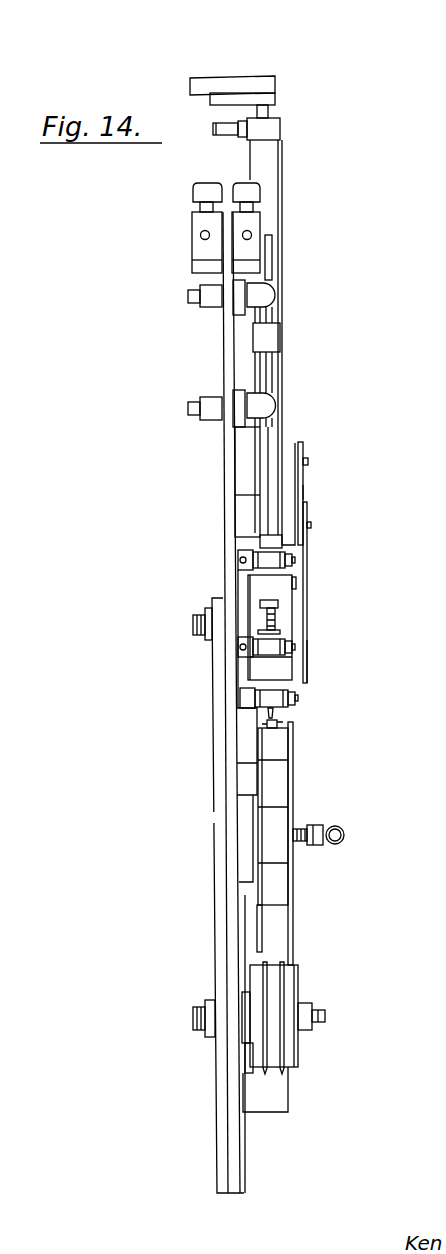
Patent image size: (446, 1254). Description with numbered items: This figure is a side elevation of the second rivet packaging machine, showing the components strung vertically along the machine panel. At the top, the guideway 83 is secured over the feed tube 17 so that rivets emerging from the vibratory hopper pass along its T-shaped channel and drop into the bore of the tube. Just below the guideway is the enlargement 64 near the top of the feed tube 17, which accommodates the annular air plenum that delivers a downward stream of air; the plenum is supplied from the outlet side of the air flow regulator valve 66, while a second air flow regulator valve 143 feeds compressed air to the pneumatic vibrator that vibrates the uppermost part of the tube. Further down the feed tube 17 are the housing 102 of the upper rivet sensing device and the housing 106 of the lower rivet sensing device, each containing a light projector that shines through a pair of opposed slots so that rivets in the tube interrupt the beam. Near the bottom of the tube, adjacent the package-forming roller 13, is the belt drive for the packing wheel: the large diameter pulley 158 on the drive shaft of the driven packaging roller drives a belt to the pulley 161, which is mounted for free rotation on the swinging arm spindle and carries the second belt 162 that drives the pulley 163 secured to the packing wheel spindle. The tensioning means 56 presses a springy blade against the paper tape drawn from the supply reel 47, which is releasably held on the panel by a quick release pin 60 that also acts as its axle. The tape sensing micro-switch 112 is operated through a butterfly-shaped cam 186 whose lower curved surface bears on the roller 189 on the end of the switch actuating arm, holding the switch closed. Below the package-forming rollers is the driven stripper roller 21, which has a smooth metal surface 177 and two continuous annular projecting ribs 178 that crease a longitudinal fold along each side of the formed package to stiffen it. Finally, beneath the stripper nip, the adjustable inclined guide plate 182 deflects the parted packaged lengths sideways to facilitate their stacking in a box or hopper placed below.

The guideway 83 is at (255, 86).
The enlargement 64 is at (281, 128).
The air flow regulator valve 143 is at (192, 237).
The air flow regulator valve 66 is at (257, 226).
The housing 102 is at (265, 295).
The housing 106 is at (267, 403).
The feed tube 17 is at (270, 447).
The pulley 163 is at (307, 455).
The second belt 162 is at (304, 493).
The pulley 161 is at (309, 520).
The package-forming roller 13 is at (279, 589).
The tensioning means 56 is at (275, 645).
The large diameter pulley 158 is at (309, 660).
The butterfly-shaped cam 186 is at (292, 703).
The roller 189 is at (280, 724).
The tape sensing micro-switch 112 is at (275, 752).
The quick release pin 60 is at (302, 827).
The supply reel 47 is at (292, 903).
The annular projecting ribs 178 is at (266, 961).
The smooth metal surface 177 is at (300, 972).
The stripper roller 21 is at (293, 1043).
The adjustable inclined guide plate 182 is at (290, 1092).